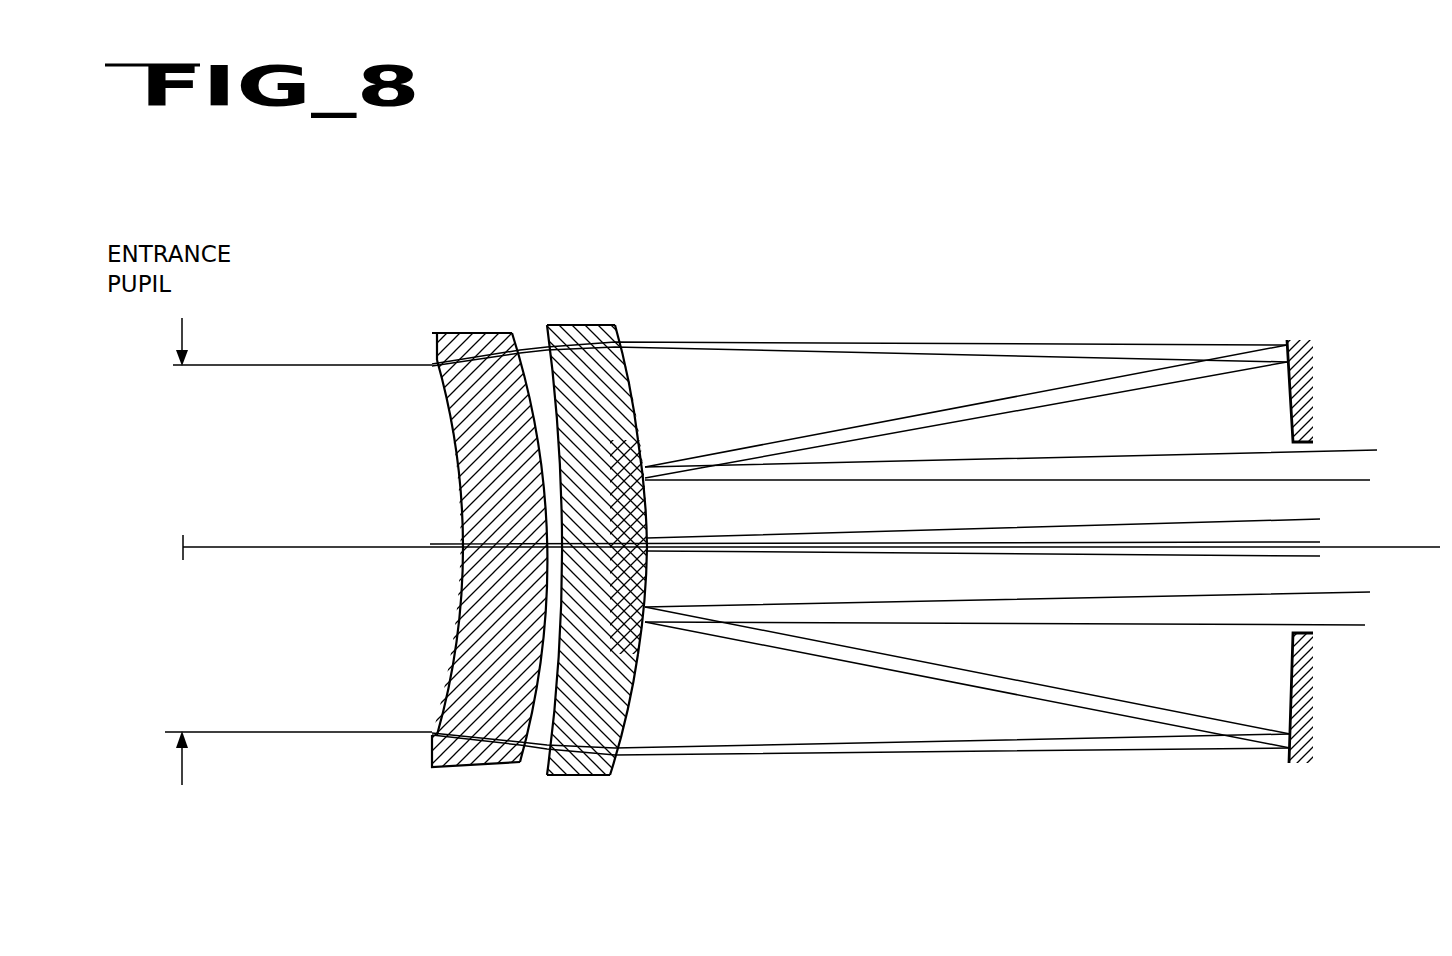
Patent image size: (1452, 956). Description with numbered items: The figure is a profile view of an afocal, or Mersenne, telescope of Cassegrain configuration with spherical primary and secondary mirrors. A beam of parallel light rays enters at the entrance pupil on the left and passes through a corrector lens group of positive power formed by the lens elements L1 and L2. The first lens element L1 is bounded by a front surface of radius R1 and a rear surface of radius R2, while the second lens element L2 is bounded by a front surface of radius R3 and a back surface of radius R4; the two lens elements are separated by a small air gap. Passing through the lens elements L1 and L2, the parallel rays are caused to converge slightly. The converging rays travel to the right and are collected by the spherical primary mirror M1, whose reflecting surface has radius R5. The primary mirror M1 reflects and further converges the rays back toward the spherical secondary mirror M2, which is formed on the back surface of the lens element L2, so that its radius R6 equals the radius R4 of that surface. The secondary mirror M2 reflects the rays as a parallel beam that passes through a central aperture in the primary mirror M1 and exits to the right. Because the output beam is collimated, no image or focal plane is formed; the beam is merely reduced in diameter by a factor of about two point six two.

The lens element L1 is at (452, 333).
The lens element L2 is at (577, 326).
The spherical primary mirror M1 is at (1287, 341).
The spherical secondary mirror M2 is at (645, 464).
The radius of first surface of lens element L1 R1 is at (445, 700).
The radius of second surface of lens element L1 R2 is at (520, 763).
The radius of first surface of lens element L2 R3 is at (546, 748).
The radius of second surface of lens element L2 R4 is at (612, 773).
The radius of primary mirror surface R5 is at (1290, 756).
The radius of secondary mirror surface R6 is at (642, 626).